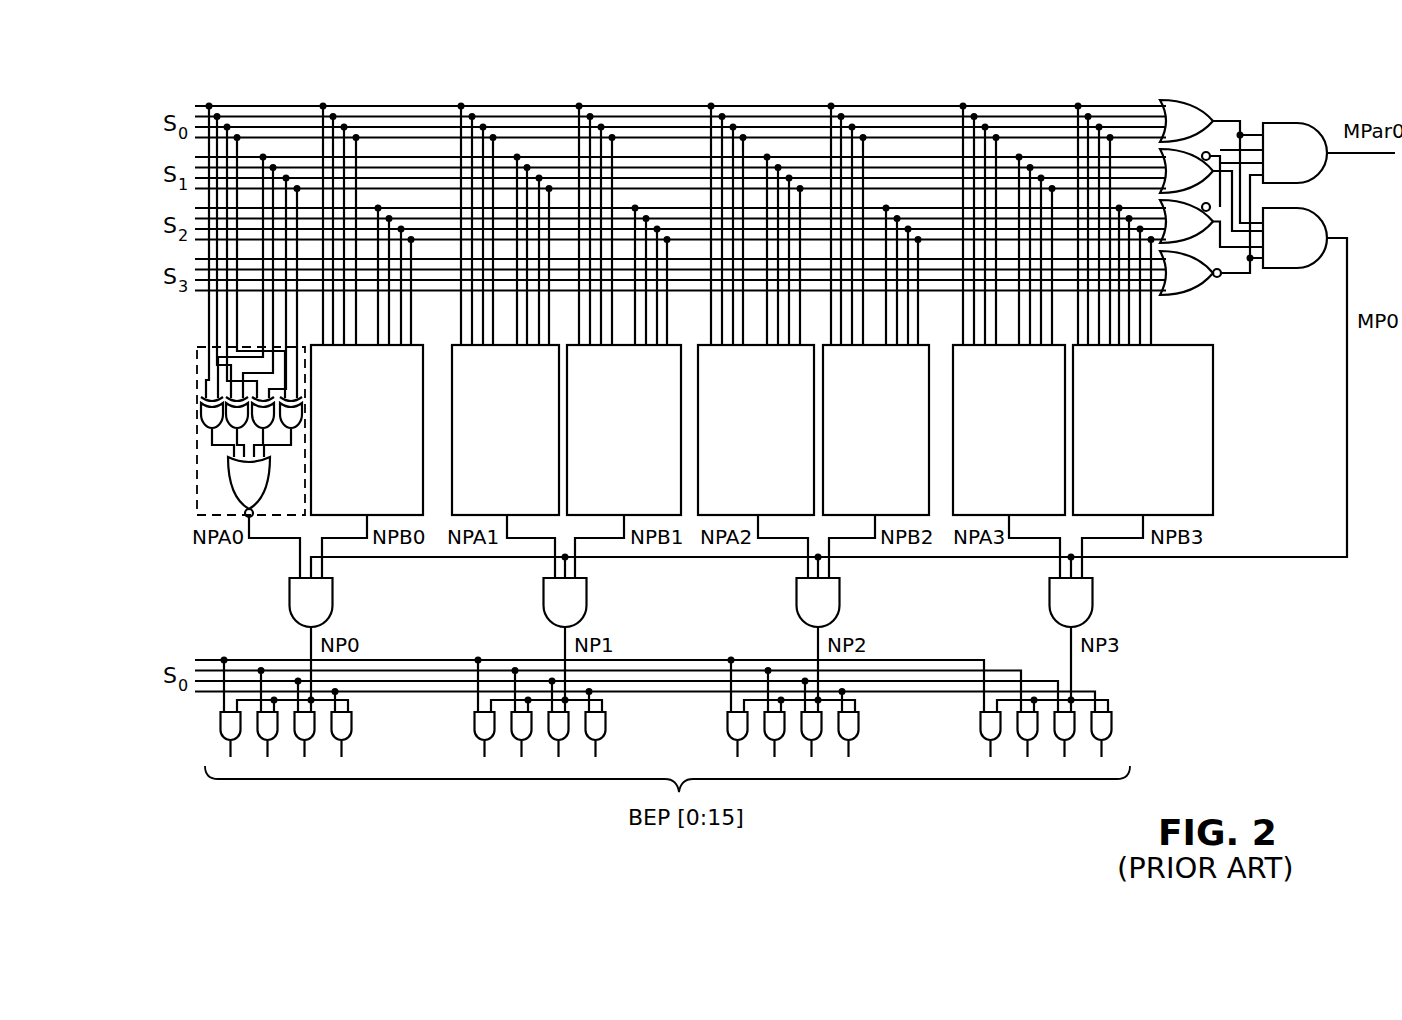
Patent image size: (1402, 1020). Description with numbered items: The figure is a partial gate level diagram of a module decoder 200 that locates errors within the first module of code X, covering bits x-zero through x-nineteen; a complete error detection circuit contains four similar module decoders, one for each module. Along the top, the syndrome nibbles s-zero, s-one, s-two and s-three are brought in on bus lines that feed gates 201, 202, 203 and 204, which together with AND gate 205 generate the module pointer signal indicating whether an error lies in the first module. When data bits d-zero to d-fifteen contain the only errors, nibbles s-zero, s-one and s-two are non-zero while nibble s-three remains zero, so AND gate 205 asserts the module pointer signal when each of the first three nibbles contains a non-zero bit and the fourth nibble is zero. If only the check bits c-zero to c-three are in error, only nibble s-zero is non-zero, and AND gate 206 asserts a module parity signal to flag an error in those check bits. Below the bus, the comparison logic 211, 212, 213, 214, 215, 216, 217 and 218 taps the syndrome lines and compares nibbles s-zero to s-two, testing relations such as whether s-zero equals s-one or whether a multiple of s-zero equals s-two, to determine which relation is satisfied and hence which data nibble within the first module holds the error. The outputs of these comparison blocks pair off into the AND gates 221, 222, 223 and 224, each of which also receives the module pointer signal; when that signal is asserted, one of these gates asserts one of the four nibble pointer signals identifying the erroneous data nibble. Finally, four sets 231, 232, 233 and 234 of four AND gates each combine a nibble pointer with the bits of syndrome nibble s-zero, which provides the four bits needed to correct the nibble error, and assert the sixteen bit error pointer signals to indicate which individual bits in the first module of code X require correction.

The module decoder 200 is at (383, 99).
The gate 201 is at (1204, 134).
The gate 202 is at (1204, 184).
The gate 203 is at (1204, 234).
The gate 204 is at (1204, 286).
The AND gate 205 is at (1314, 252).
The AND gate 206 is at (1314, 167).
The logic 211 is at (197, 490).
The logic 212 is at (389, 497).
The logic 213 is at (527, 497).
The logic 214 is at (645, 497).
The logic 215 is at (778, 497).
The logic 216 is at (896, 497).
The logic 217 is at (1031, 497).
The logic 218 is at (1163, 497).
The AND gate 221 is at (332, 590).
The AND gate 222 is at (586, 590).
The AND gate 223 is at (839, 590).
The AND gate 224 is at (1092, 590).
The set of four AND gates 231 is at (220, 721).
The set of four AND gates 232 is at (474, 721).
The set of four AND gates 233 is at (727, 721).
The set of four AND gates 234 is at (980, 721).